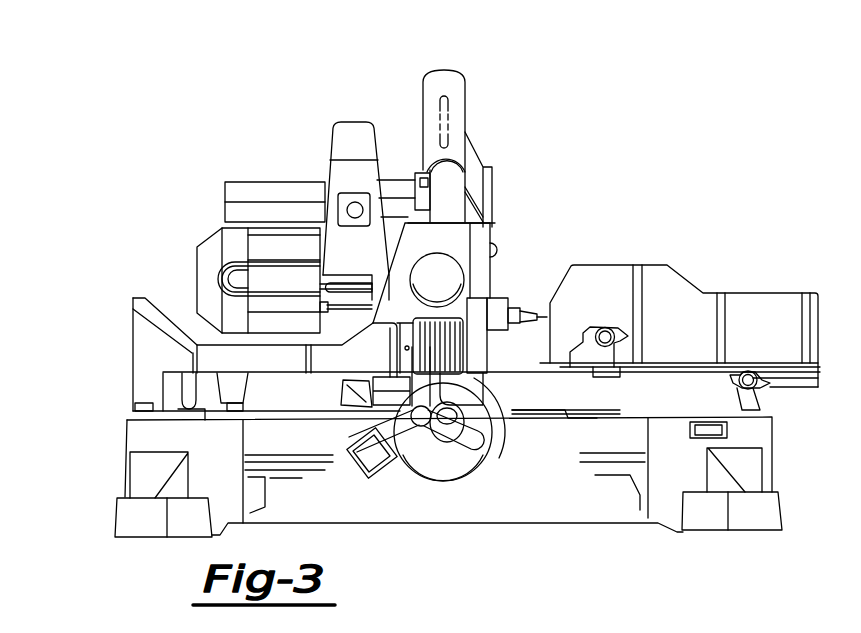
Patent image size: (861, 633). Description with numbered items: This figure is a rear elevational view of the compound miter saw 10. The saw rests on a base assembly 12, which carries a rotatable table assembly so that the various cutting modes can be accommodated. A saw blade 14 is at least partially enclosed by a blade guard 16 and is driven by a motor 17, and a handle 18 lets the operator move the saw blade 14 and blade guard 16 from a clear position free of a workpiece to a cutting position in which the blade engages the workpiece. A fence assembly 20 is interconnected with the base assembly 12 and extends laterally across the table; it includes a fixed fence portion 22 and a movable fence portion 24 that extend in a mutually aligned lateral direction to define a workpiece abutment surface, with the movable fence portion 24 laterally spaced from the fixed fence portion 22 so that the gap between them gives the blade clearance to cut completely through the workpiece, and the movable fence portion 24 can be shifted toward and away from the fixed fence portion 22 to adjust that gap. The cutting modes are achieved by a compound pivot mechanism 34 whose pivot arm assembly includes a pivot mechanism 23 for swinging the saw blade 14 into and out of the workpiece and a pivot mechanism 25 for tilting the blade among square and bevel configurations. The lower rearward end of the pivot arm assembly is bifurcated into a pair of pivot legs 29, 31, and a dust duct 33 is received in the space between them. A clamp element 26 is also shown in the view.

The compound miter saw 10 is at (592, 182).
The base assembly 12 is at (748, 438).
The saw blade 14 is at (456, 107).
The blade guard 16 is at (433, 85).
The motor 17 is at (204, 238).
The handle 18 is at (270, 188).
The fence assembly 20 is at (127, 400).
The fixed fence portion 22 is at (147, 357).
The pivot mechanism 23 is at (448, 344).
The movable fence portion 24 is at (750, 310).
The pivot mechanism 25 is at (450, 461).
The clamp 26 is at (740, 393).
The pivot leg 29 is at (470, 343).
The pivot leg 31 is at (343, 389).
The dust duct 33 is at (445, 268).
The compound pivot mechanism 34 is at (469, 414).